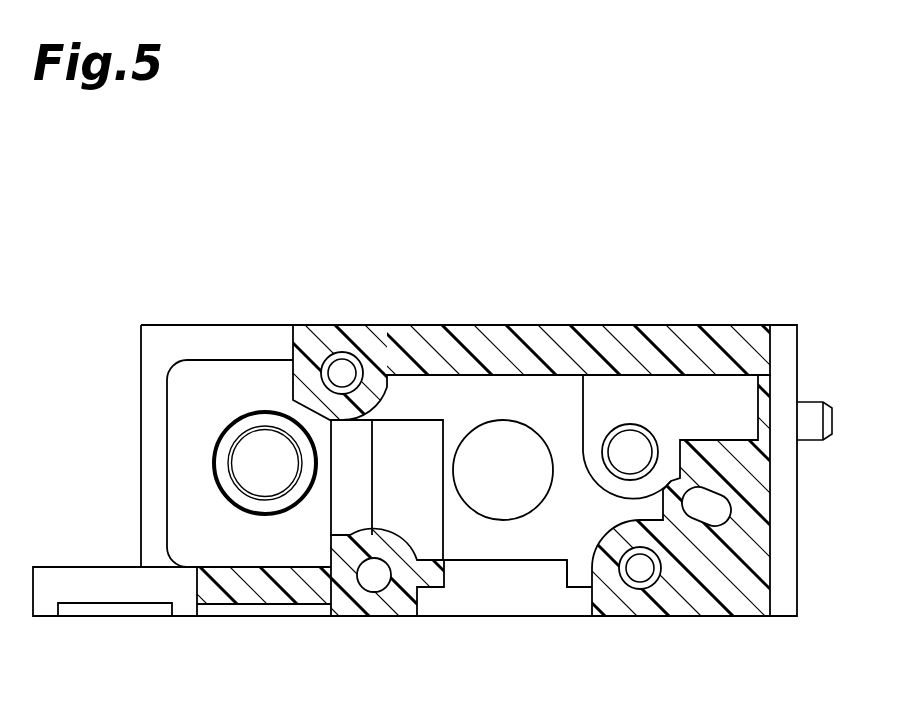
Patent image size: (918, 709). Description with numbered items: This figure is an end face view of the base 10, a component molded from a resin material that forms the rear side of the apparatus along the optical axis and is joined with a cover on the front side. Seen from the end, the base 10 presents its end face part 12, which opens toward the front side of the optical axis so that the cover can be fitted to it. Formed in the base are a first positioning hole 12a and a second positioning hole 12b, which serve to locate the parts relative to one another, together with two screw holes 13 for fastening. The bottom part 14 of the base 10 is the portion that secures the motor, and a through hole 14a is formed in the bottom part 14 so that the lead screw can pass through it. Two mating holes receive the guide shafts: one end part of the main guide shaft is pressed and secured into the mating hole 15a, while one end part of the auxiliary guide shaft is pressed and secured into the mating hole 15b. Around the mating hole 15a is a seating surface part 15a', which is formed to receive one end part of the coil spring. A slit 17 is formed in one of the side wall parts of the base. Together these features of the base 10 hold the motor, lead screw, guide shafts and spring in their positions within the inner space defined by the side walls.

The base 10 is at (569, 316).
The end face part 12 is at (738, 332).
The first positioning hole 12a is at (382, 585).
The second positioning hole 12b is at (719, 511).
The screw hole 13 is at (350, 375).
The bottom part 14 is at (448, 393).
The through hole 14a is at (493, 432).
The mating hole 15a is at (184, 463).
The seating surface part 15a' is at (265, 386).
The mating hole 15b is at (638, 448).
The slit 17 is at (566, 582).